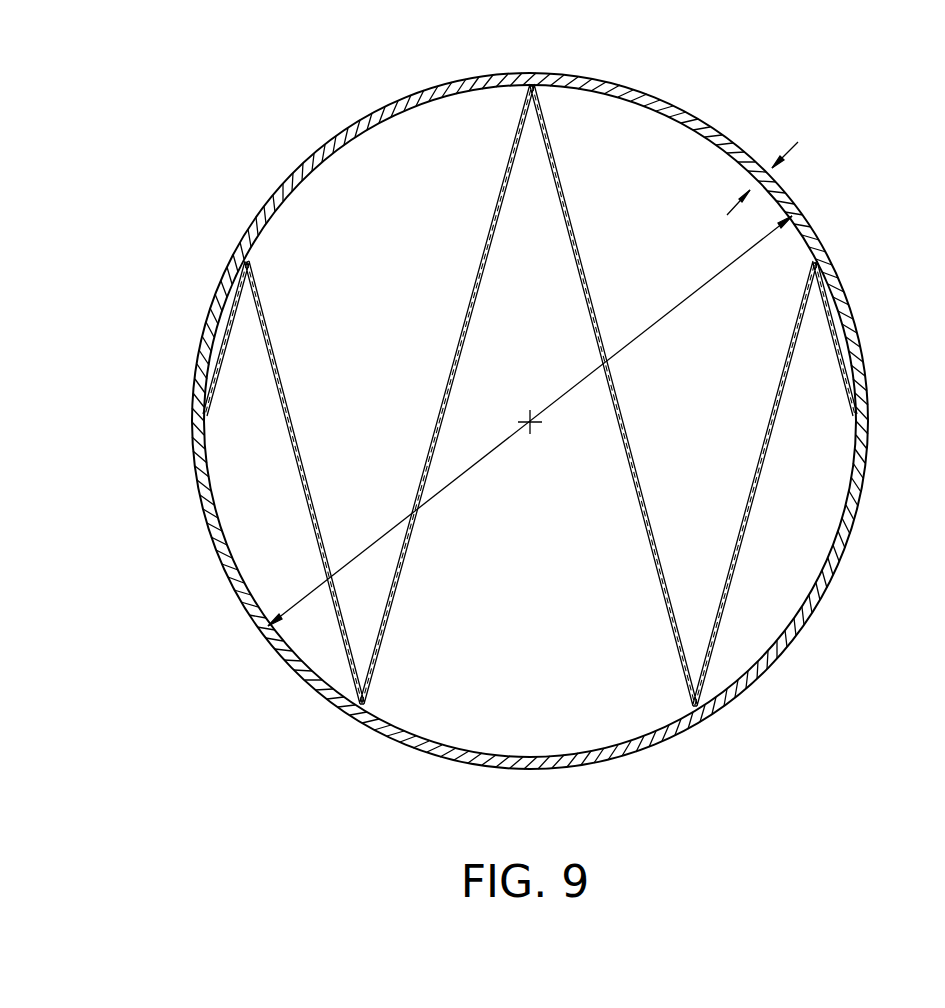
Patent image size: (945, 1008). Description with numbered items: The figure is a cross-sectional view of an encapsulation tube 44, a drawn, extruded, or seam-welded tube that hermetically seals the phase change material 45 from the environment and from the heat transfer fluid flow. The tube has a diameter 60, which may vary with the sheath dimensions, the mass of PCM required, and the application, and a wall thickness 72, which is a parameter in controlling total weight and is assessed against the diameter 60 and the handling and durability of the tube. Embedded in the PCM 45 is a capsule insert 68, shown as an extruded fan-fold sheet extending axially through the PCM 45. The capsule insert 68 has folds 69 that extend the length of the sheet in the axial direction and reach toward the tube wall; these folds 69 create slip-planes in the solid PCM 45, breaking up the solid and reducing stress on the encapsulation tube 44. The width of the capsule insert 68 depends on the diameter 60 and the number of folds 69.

The encapsulation tube 44 is at (195, 367).
The phase change material (PCM) 45 is at (513, 454).
The diameter 60 is at (305, 592).
The capsule insert 68 is at (337, 638).
The fold 69 is at (537, 77).
The wall thickness 72 is at (783, 152).